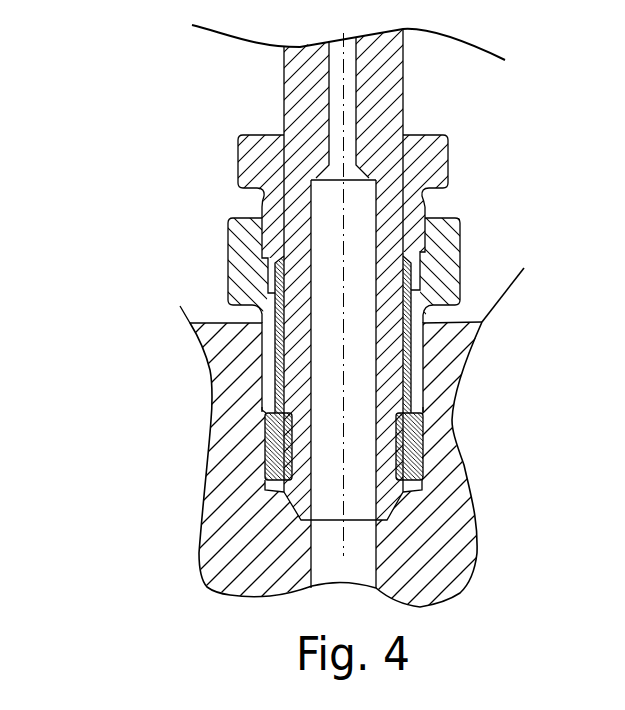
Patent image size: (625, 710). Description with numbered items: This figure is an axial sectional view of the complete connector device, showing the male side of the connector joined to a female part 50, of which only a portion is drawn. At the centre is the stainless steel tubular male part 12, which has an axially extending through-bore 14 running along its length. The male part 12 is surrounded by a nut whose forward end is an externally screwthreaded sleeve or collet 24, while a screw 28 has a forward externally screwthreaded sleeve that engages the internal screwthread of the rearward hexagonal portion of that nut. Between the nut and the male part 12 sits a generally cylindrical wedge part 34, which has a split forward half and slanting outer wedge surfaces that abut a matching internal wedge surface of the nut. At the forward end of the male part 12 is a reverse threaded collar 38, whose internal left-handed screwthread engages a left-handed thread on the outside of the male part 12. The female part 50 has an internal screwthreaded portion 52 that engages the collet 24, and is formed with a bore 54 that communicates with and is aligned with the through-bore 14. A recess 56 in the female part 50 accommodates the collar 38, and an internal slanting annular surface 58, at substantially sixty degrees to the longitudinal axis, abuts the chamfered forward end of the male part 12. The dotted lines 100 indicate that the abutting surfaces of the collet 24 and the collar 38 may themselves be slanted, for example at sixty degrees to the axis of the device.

The tubular male part 12 is at (380, 72).
The through-bore 14 is at (358, 230).
The externally screwthreaded sleeve portion 24 is at (262, 376).
The screw 28 is at (246, 184).
The wedge part 34 is at (243, 323).
The reverse threaded collar 38 is at (265, 445).
The female part 50 is at (440, 525).
The internal screwthreaded portion 52 is at (455, 337).
The bore 54 is at (355, 568).
The recess 56 is at (423, 440).
The internal slanting annular surface 58 is at (300, 520).
The dotted lines 100 is at (262, 410).